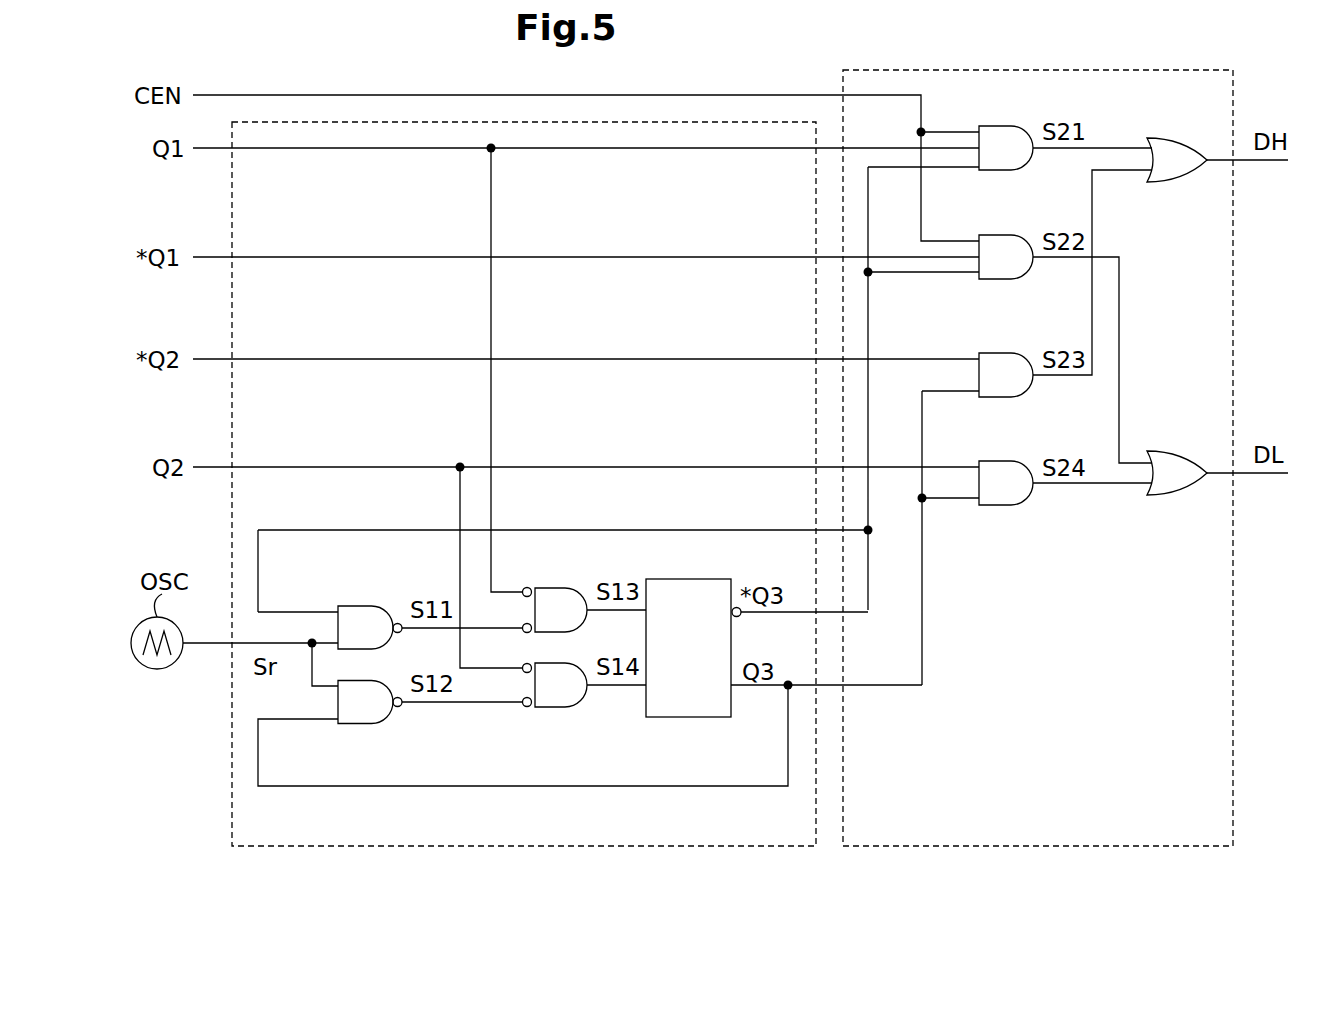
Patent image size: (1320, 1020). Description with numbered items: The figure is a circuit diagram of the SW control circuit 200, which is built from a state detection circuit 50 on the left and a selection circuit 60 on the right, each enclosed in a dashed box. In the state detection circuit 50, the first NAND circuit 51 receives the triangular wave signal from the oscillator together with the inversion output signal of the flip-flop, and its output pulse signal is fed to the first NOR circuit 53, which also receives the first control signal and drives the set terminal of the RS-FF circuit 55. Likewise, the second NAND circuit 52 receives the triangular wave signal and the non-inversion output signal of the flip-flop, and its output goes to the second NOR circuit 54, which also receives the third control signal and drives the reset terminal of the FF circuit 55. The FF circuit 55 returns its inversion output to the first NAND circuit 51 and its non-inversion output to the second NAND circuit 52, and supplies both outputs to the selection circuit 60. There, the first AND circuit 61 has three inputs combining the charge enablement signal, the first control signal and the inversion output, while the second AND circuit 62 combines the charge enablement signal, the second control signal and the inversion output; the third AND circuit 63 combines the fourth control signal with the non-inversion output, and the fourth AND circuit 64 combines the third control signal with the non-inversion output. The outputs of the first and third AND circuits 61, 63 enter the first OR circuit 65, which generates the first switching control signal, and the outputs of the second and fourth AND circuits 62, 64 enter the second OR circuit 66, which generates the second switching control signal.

The SW control circuit 200 is at (807, 45).
The state detection circuit 50 is at (725, 122).
The first NAND circuit 51 is at (358, 606).
The second NAND circuit 52 is at (354, 724).
The first NOR circuit 53 is at (550, 588).
The second NOR circuit 54 is at (550, 707).
The RS-FF circuit 55 is at (685, 579).
The selection circuit 60 is at (843, 80).
The first AND circuit 61 is at (992, 126).
The second AND circuit 62 is at (994, 235).
The third AND circuit 63 is at (994, 353).
The fourth AND circuit 64 is at (994, 461).
The first OR circuit 65 is at (1158, 138).
The second OR circuit 66 is at (1158, 451).